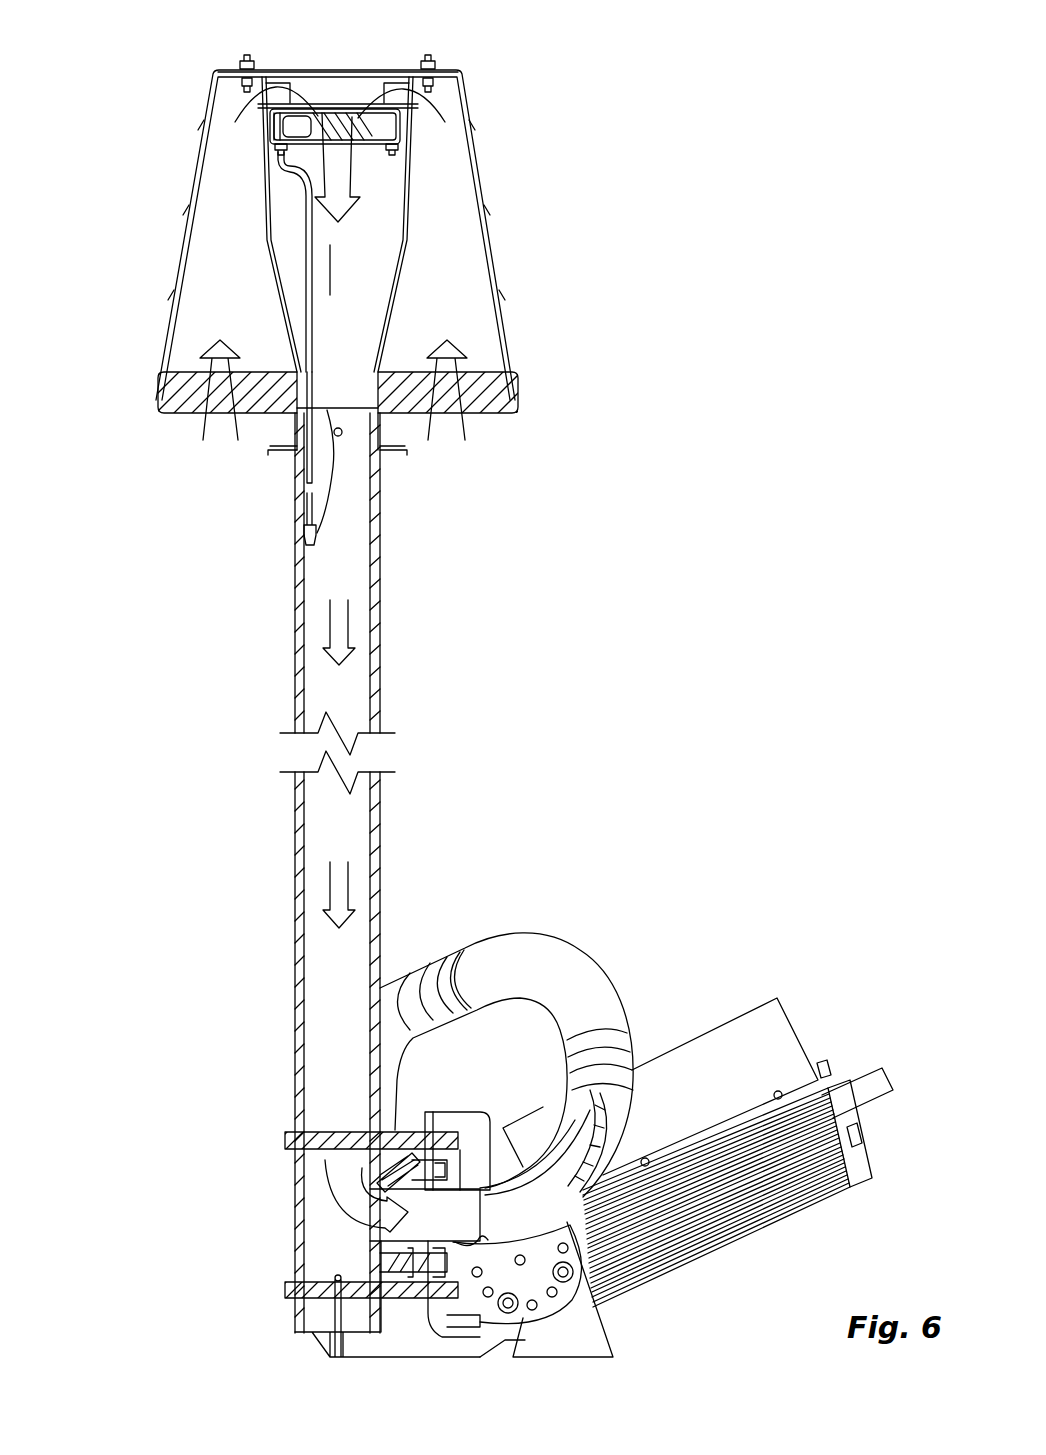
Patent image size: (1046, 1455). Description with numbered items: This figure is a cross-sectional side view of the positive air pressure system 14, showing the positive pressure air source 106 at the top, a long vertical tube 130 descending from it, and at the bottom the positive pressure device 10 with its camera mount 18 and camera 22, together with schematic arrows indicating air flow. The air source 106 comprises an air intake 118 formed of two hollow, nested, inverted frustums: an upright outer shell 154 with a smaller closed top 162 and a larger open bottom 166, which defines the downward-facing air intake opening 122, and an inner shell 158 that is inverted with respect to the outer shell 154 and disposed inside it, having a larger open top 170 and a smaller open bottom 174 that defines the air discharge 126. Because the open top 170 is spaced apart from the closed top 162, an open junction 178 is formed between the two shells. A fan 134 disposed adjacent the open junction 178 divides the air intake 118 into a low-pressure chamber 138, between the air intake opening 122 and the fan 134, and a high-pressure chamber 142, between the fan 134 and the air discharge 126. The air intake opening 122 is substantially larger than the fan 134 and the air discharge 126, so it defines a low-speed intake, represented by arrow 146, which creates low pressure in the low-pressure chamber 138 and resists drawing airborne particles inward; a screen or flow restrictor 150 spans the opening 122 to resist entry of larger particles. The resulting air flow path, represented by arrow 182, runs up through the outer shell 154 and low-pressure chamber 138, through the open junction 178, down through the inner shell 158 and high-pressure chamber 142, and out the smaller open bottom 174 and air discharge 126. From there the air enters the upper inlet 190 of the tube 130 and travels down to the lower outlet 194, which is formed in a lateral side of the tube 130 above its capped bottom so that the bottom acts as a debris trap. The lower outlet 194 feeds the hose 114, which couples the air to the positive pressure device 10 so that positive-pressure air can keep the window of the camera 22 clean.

The positive pressure device 10 is at (268, 1262).
The positive air pressure system 14 is at (427, 800).
The camera mount 18 is at (475, 1130).
The camera 22 is at (820, 1190).
The positive pressure air source 106 is at (513, 265).
The hose 114 is at (527, 946).
The air intake 118 is at (190, 232).
The air intake opening 122 is at (470, 420).
The air discharge 126 is at (297, 455).
The tube 130 is at (297, 825).
The fan 134 is at (385, 130).
The low-pressure chamber 138 is at (440, 252).
The high-pressure chamber 142 is at (330, 268).
The low-speed air flow 146 is at (205, 428).
The screen or flow restrictor 150 is at (505, 378).
The outer shell 154 is at (207, 142).
The inner shell 158 is at (265, 196).
The closed top 162 is at (395, 70).
The larger open bottom 166 is at (512, 415).
The open top 170 is at (260, 106).
The smaller open bottom 174 is at (382, 462).
The open junction 178 is at (412, 92).
The air flow path 182 is at (335, 163).
The upper inlet 190 is at (315, 492).
The lower outlet 194 is at (300, 1235).